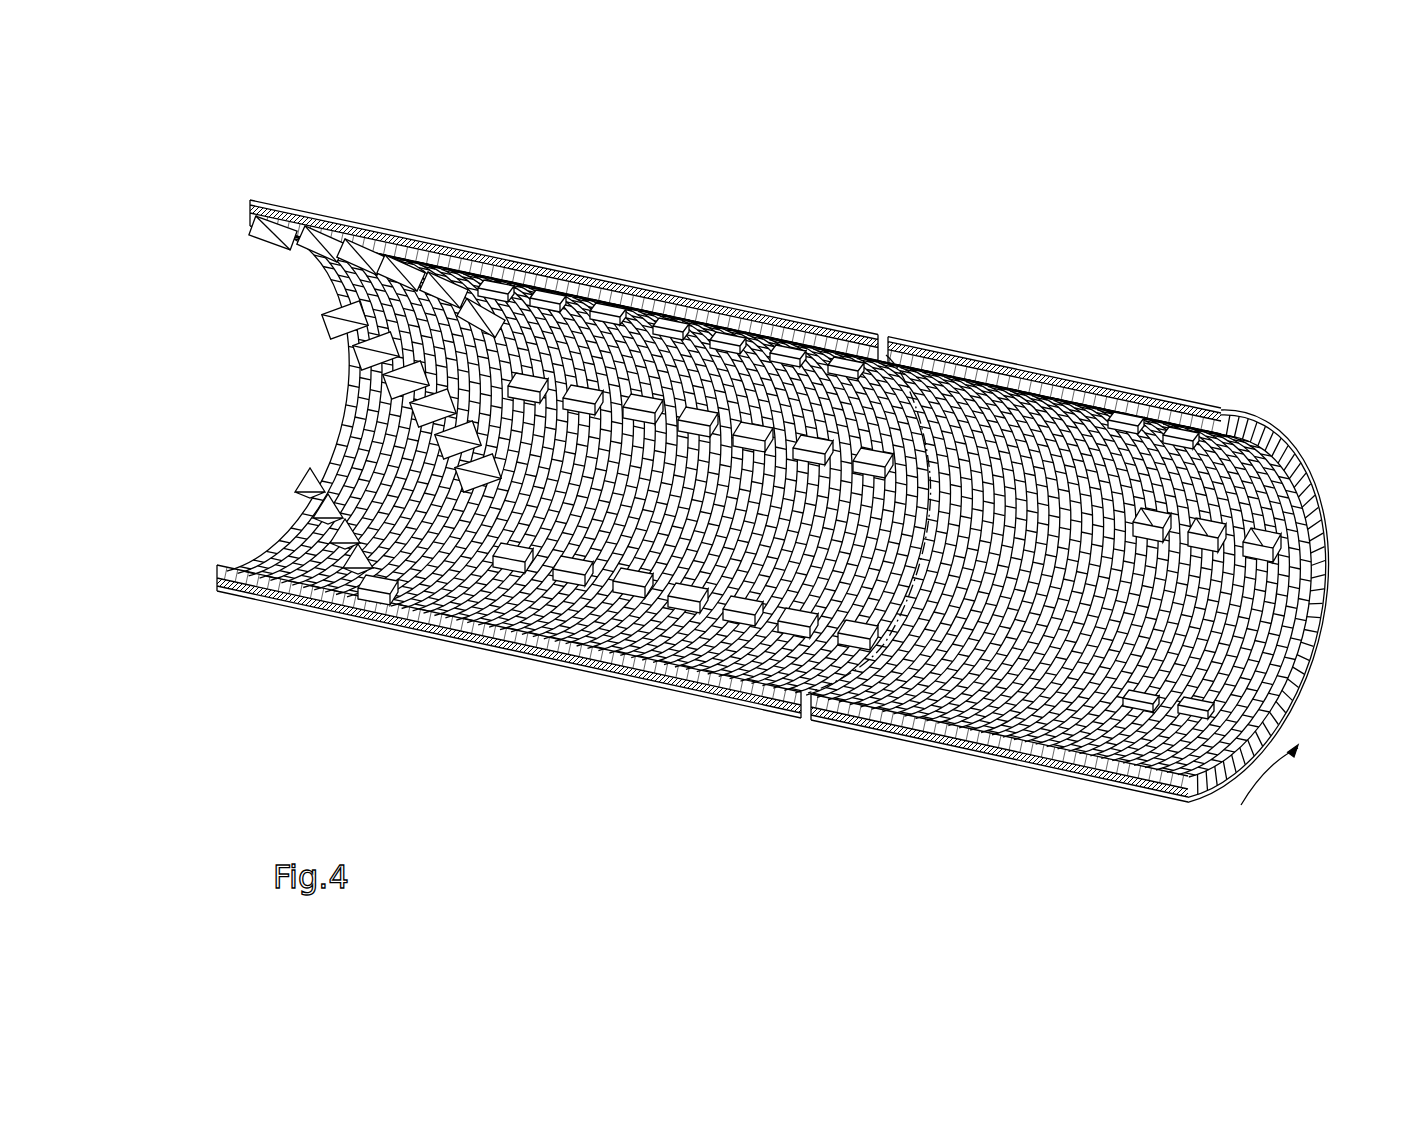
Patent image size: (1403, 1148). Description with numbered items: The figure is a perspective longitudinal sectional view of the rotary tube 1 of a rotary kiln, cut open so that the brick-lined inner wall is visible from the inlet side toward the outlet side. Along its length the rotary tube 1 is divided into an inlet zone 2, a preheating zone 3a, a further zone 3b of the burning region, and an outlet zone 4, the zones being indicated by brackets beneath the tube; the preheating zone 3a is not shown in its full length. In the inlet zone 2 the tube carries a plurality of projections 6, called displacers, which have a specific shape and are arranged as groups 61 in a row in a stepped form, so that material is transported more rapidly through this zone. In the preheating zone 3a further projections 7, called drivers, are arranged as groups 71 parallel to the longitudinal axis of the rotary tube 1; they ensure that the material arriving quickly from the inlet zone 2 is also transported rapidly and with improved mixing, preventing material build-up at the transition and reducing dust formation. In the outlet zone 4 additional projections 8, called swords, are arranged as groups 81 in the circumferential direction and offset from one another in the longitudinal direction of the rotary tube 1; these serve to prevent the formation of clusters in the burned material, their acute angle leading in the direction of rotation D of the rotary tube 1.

The rotary tube 1 is at (975, 248).
The inlet zone 2 is at (205, 623).
The preheating zone 3a is at (380, 661).
The second intermediate section 3b is at (802, 753).
The outlet zone 4 is at (1008, 799).
The projections 6 is at (380, 275).
The groups 61 is at (368, 200).
The further projections 7 is at (695, 405).
The groups 71 is at (685, 268).
The additional projections 8 is at (1120, 400).
The groups 81 is at (1185, 380).
The direction of rotation D is at (1265, 777).